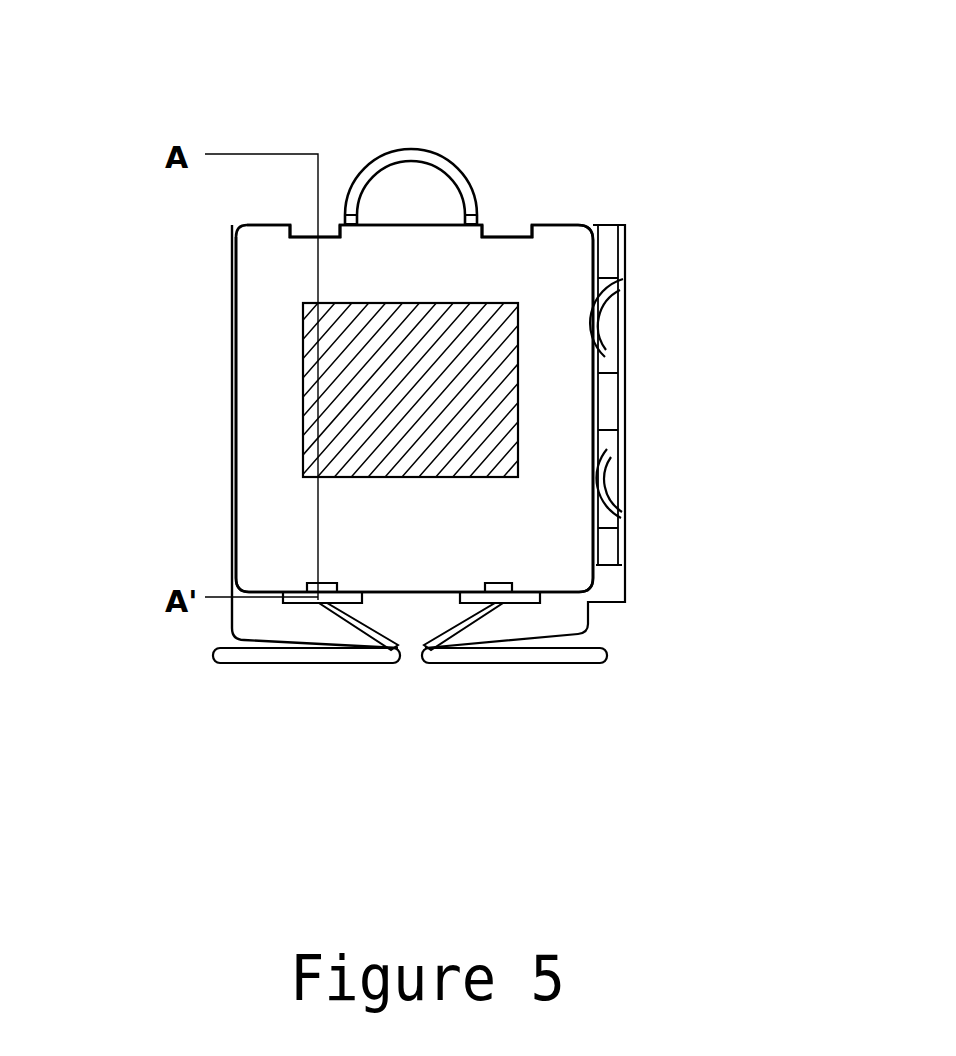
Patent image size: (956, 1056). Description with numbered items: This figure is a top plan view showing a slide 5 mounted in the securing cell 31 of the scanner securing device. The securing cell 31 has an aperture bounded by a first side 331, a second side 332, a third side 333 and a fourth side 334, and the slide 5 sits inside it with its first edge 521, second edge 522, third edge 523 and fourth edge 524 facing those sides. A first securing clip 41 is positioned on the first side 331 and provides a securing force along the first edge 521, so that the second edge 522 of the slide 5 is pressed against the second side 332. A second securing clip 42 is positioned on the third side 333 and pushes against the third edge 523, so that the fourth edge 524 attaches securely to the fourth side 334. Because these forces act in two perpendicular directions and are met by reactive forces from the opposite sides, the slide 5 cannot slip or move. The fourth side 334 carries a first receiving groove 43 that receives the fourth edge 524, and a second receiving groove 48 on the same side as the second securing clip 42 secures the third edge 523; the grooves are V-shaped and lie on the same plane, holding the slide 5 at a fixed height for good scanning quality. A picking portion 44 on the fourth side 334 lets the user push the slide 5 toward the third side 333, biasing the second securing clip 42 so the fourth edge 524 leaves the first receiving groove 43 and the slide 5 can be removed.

The slide 5 is at (560, 276).
The securing cell 31 is at (622, 183).
The first side 331 is at (624, 388).
The second side 332 is at (233, 307).
The third side 333 is at (394, 664).
The fourth side 334 is at (421, 222).
The first securing clip 41 is at (600, 322).
The second securing clip 42 is at (325, 597).
The first receiving groove 43 is at (290, 225).
The picking portion 44 is at (405, 190).
The second receiving groove 48 is at (337, 583).
The first edge 521 is at (582, 418).
The second edge 522 is at (245, 405).
The third edge 523 is at (410, 592).
The fourth edge 524 is at (447, 243).